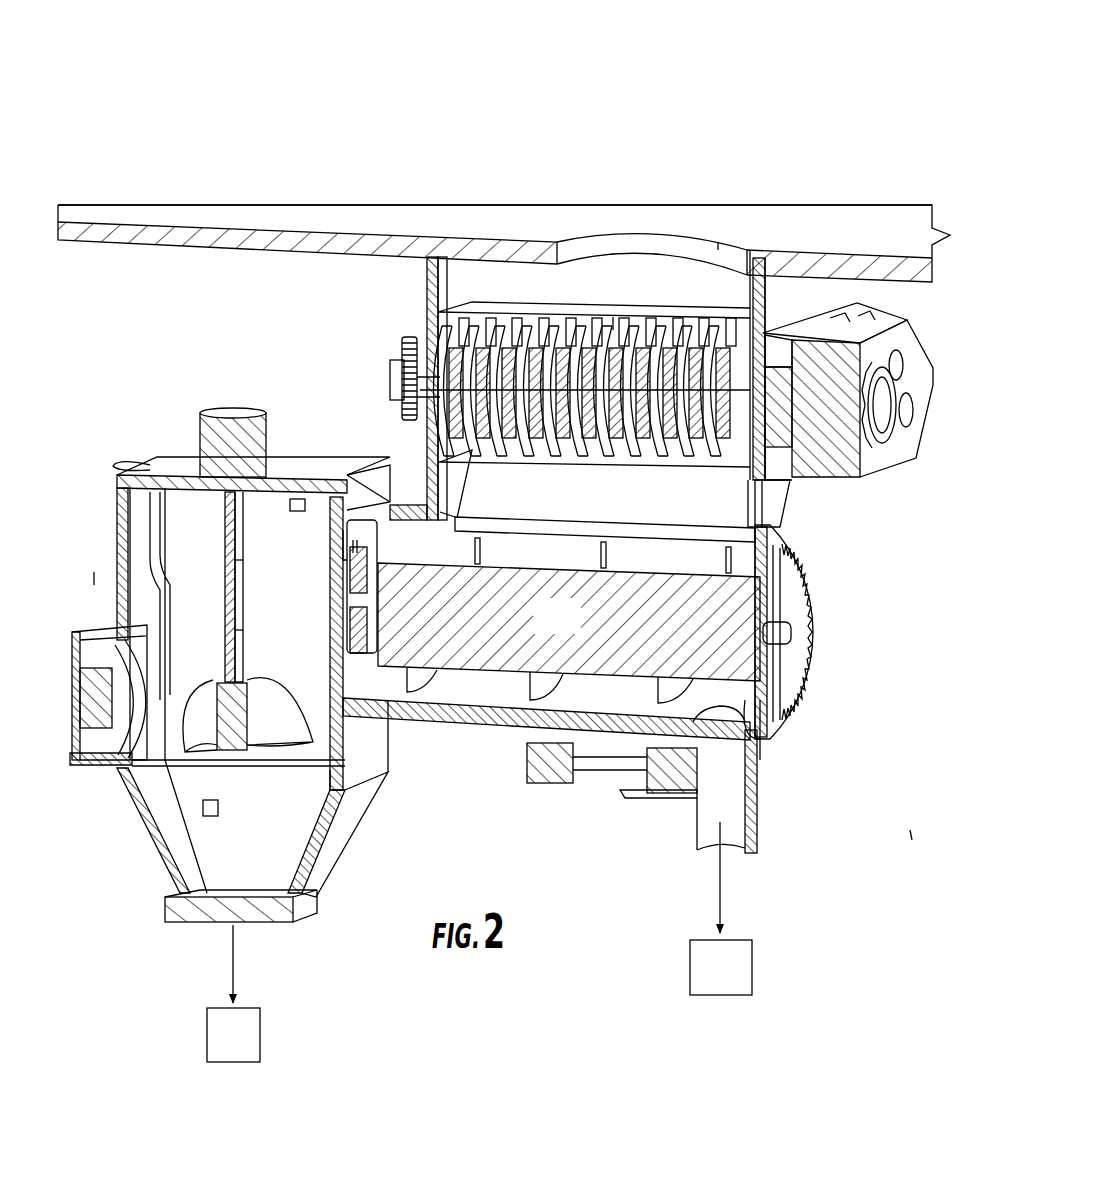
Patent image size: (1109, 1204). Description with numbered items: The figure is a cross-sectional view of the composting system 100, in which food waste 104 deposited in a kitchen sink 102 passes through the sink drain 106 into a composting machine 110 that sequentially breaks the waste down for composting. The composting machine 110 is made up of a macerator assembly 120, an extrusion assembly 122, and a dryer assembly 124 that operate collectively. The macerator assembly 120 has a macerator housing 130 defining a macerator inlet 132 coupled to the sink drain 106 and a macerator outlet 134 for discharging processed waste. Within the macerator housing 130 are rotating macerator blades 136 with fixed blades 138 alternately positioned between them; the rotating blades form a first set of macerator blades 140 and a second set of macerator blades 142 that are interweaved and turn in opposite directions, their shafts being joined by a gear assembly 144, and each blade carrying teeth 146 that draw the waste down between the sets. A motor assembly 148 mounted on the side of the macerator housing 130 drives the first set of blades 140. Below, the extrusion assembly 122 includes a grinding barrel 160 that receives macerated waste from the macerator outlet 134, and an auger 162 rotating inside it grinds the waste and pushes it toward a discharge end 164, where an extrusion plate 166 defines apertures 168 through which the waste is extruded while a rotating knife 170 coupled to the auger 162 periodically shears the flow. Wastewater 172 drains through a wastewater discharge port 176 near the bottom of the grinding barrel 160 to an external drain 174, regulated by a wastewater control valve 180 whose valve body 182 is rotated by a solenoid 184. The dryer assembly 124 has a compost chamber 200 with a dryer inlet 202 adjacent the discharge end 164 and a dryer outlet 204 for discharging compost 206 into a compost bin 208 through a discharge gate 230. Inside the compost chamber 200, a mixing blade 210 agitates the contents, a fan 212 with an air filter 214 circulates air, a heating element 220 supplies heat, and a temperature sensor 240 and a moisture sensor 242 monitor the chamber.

The composting system 100 is at (812, 48).
The kitchen sink 102 is at (170, 230).
The food waste 104 is at (655, 273).
The sink drain 106 is at (720, 240).
The composting machine 110 is at (912, 832).
The macerator assembly 120 is at (335, 337).
The extrusion assembly 122 is at (892, 657).
The dryer assembly 124 is at (92, 572).
The macerator housing 130 is at (435, 297).
The macerator inlet 132 is at (588, 275).
The macerator outlet 134 is at (726, 513).
The macerator blades 136 is at (520, 325).
The fixed blades 138 is at (512, 330).
The first set of macerator blades 140 is at (742, 255).
The second set of macerator blades 142 is at (395, 392).
The gear assembly 144 is at (400, 350).
The teeth 146 is at (613, 317).
The motor assembly 148 is at (905, 340).
The grinding barrel 160 is at (447, 716).
The auger 162 is at (573, 632).
The discharge end 164 is at (405, 520).
The extrusion plate 166 is at (348, 545).
The apertures 168 is at (325, 630).
The rotating knife 170 is at (370, 553).
The wastewater 172 is at (723, 880).
The external drain 174 is at (737, 987).
The wastewater discharge port 176 is at (760, 787).
The wastewater control valve 180 is at (668, 798).
The valve body 182 is at (695, 800).
The solenoid 184 is at (545, 788).
The compost chamber 200 is at (123, 520).
The dryer inlet 202 is at (325, 560).
The dryer outlet 204 is at (255, 880).
The compost 206 is at (236, 962).
The compost bin 208 is at (250, 1055).
The mixing blade 210 is at (207, 740).
The fan 212 is at (82, 748).
The air filter 214 is at (72, 670).
The heating element 220 is at (158, 478).
The discharge gate 230 is at (185, 915).
The temperature sensor 240 is at (298, 499).
The moisture sensor 242 is at (203, 810).